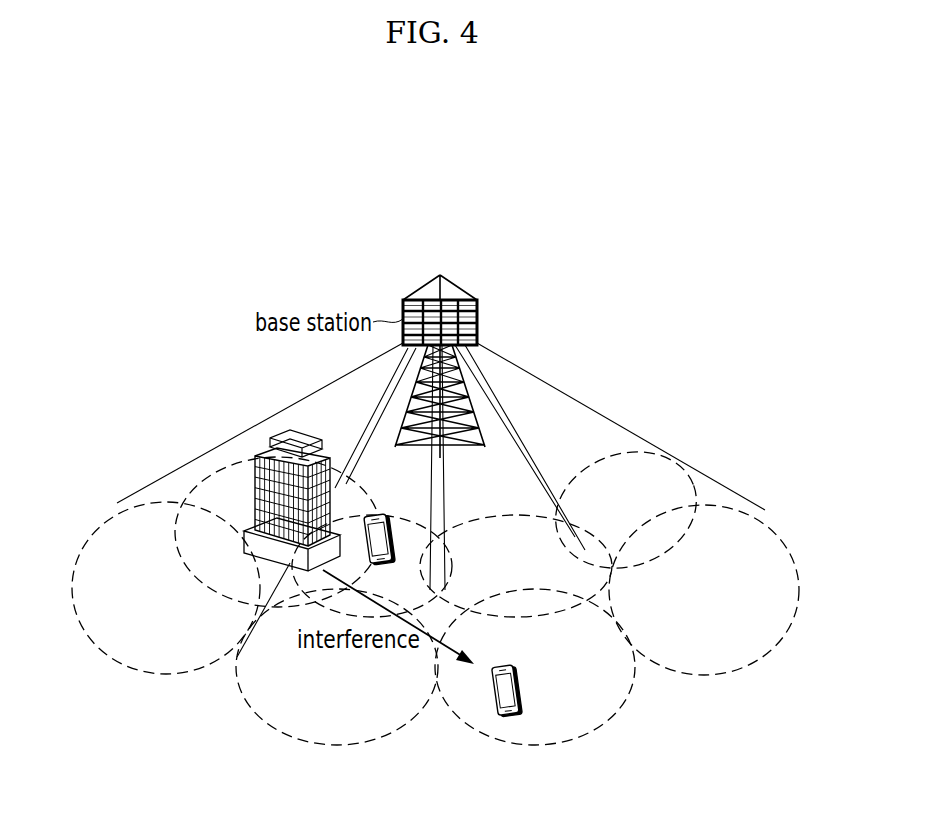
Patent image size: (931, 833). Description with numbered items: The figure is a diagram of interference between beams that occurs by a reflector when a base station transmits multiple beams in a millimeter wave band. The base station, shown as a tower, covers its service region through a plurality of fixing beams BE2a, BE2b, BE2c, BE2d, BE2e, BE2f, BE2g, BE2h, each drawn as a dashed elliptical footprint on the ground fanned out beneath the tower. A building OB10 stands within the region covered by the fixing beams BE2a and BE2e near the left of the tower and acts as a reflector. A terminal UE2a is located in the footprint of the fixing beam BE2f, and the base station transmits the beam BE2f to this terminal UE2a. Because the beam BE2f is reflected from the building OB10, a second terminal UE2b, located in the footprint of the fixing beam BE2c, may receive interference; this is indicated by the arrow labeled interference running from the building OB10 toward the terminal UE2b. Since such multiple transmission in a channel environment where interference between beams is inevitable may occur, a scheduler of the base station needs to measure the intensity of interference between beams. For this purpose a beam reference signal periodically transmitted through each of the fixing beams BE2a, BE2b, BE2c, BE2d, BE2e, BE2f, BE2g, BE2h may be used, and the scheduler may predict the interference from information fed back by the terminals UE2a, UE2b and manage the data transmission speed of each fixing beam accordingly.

The building OB10 is at (292, 440).
The fixing beam BE2a is at (118, 502).
The fixing beam BE2b is at (340, 747).
The fixing beam BE2c is at (535, 746).
The fixing beam BE2d is at (731, 504).
The fixing beam BE2e is at (226, 456).
The fixing beam BE2f is at (362, 516).
The fixing beam BE2g is at (478, 516).
The fixing beam BE2h is at (603, 465).
The terminal UE2a is at (394, 554).
The terminal UE2b is at (534, 690).